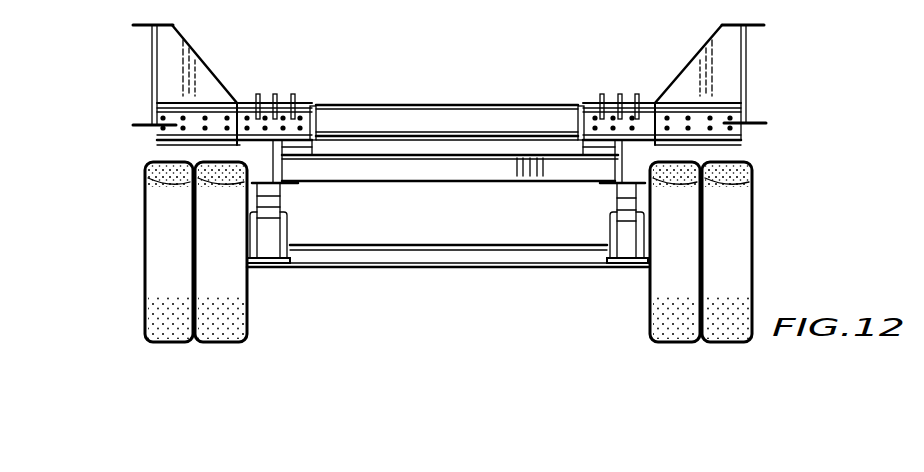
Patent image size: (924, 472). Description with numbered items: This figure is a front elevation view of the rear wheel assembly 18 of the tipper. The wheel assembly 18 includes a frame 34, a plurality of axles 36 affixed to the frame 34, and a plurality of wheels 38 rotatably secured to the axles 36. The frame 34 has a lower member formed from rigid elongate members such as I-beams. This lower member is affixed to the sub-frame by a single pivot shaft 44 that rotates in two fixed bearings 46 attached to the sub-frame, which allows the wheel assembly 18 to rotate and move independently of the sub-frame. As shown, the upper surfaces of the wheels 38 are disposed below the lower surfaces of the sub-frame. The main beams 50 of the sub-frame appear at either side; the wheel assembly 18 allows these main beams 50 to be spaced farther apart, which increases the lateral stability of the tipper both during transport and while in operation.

The wheel assembly 18 is at (372, 275).
The frame 34 is at (240, 157).
The axles 36 is at (307, 258).
The wheels 38 is at (210, 183).
The pivot shaft 44 is at (372, 118).
The fixed bearings 46 is at (302, 104).
The main beams 50 is at (152, 82).